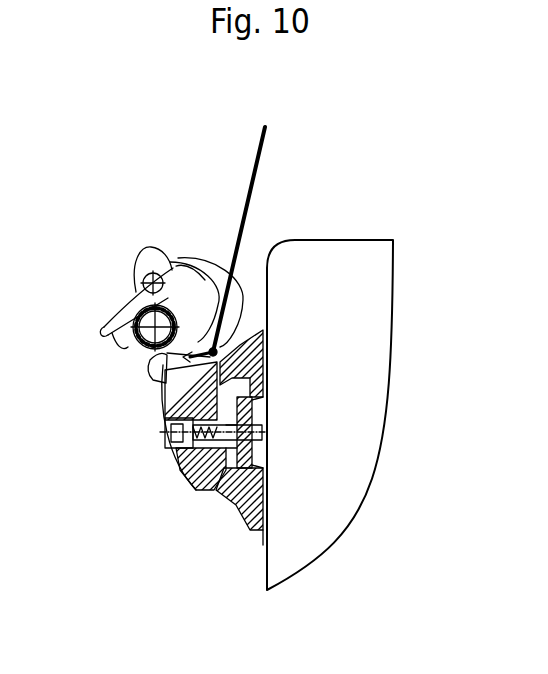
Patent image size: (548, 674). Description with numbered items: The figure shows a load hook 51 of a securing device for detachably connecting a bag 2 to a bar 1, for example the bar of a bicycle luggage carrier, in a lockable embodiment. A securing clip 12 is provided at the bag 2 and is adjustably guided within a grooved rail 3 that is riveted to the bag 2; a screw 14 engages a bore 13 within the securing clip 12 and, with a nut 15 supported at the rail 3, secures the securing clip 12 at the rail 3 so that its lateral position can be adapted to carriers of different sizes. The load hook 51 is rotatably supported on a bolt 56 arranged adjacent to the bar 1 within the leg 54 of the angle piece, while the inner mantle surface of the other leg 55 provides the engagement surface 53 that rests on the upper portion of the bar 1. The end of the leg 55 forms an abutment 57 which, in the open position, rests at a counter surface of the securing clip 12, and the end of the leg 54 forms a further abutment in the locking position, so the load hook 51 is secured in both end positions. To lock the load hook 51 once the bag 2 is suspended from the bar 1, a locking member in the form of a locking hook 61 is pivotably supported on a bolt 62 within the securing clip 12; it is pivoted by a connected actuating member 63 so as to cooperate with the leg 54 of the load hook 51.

The bar 1 is at (145, 358).
The bag 2 is at (346, 236).
The rail 3 is at (242, 508).
The securing clip 12 is at (162, 418).
The bore 13 is at (190, 464).
The screw 14 is at (176, 450).
The nut 15 is at (250, 455).
The load hook 51 is at (187, 290).
The engagement surface 53 is at (134, 272).
The leg 54 is at (112, 318).
The leg 55 is at (207, 280).
The bolt 56 is at (160, 262).
The abutment 57 is at (106, 344).
The locking hook 61 is at (153, 380).
The bolt 62 is at (250, 403).
The actuating member 63 is at (268, 137).